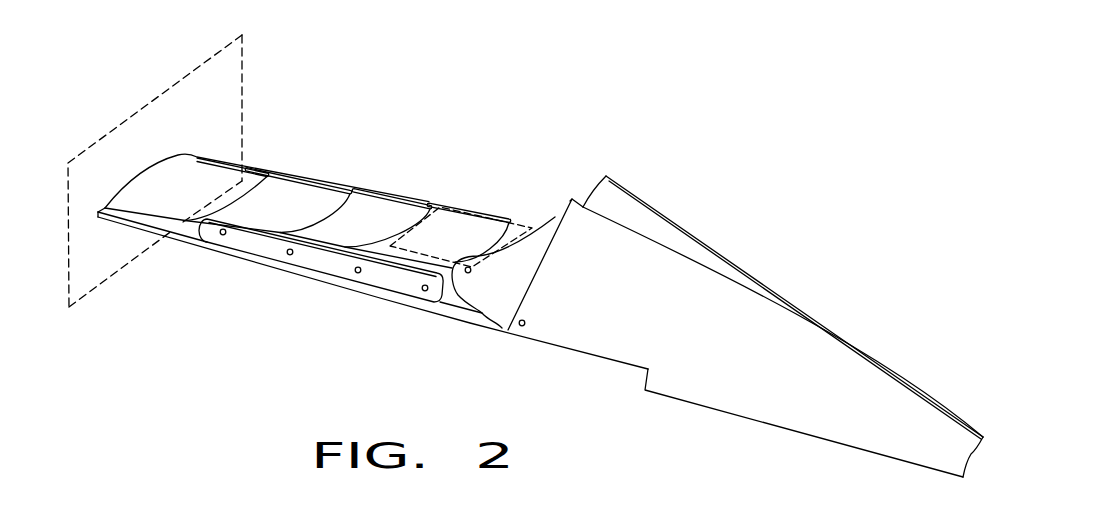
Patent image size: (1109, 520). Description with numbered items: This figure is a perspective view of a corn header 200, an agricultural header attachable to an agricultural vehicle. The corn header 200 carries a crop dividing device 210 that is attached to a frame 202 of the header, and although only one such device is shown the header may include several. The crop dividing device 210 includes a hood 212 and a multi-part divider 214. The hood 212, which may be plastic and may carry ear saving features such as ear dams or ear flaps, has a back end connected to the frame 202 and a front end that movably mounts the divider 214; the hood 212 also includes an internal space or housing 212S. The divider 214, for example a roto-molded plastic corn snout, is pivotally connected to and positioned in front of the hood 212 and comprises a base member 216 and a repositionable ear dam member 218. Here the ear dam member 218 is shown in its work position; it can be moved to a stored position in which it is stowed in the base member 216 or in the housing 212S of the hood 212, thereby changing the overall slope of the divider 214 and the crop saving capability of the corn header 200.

The corn header 200 is at (540, 254).
The frame 202 is at (243, 87).
The crop dividing device 210 is at (745, 307).
The hood 212 is at (373, 256).
The internal housing 212S is at (455, 211).
The divider 214 is at (626, 344).
The base member 216 is at (730, 400).
The ear dam member 218 is at (763, 297).